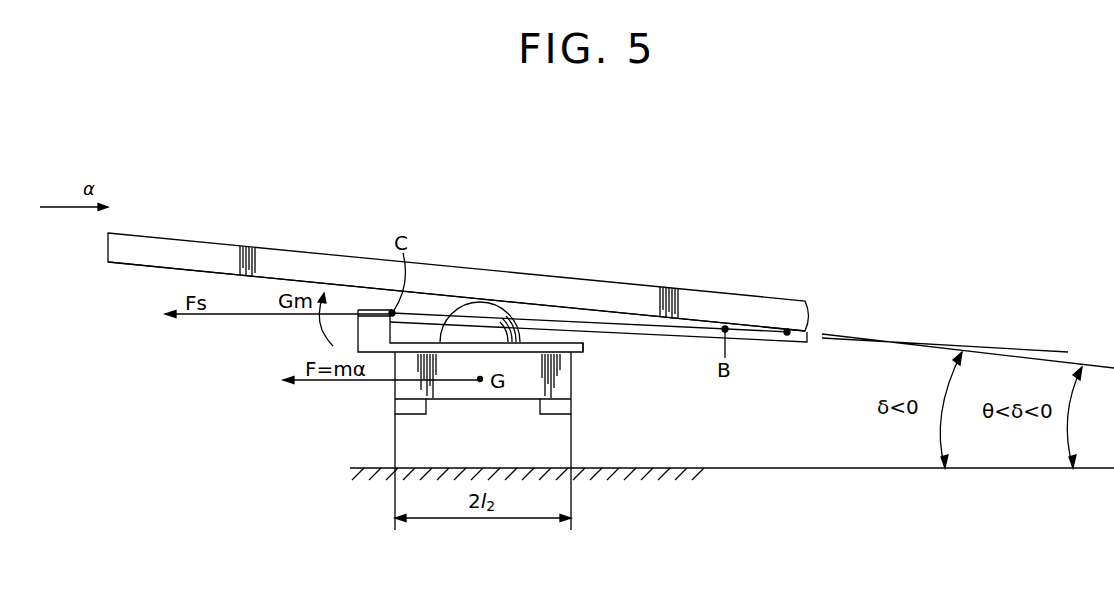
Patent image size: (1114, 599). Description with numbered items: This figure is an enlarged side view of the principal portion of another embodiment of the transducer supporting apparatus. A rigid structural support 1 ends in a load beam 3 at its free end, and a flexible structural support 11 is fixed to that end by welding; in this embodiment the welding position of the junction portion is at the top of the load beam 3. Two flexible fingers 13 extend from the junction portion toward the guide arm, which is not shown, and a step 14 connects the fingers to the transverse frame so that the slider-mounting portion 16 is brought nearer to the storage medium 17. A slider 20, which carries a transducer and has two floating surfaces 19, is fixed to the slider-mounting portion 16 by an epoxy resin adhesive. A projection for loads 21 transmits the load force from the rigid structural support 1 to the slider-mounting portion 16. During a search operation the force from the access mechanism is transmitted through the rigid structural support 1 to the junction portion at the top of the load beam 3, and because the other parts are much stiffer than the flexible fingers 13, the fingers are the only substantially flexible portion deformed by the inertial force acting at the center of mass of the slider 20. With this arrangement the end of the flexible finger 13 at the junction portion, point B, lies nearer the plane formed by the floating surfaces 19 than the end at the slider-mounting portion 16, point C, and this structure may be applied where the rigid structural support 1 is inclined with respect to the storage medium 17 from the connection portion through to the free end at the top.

The rigid structural support 1 is at (204, 243).
The load beam 3 is at (271, 262).
The flexible structural support 11 is at (363, 310).
The flexible fingers 13 is at (673, 331).
The step 14 is at (366, 333).
The slider-mounting portion 16 is at (583, 346).
The storage medium 17 is at (706, 468).
The floating surfaces 19 is at (416, 416).
The slider 20 is at (397, 394).
The projection for loads 21 is at (484, 302).